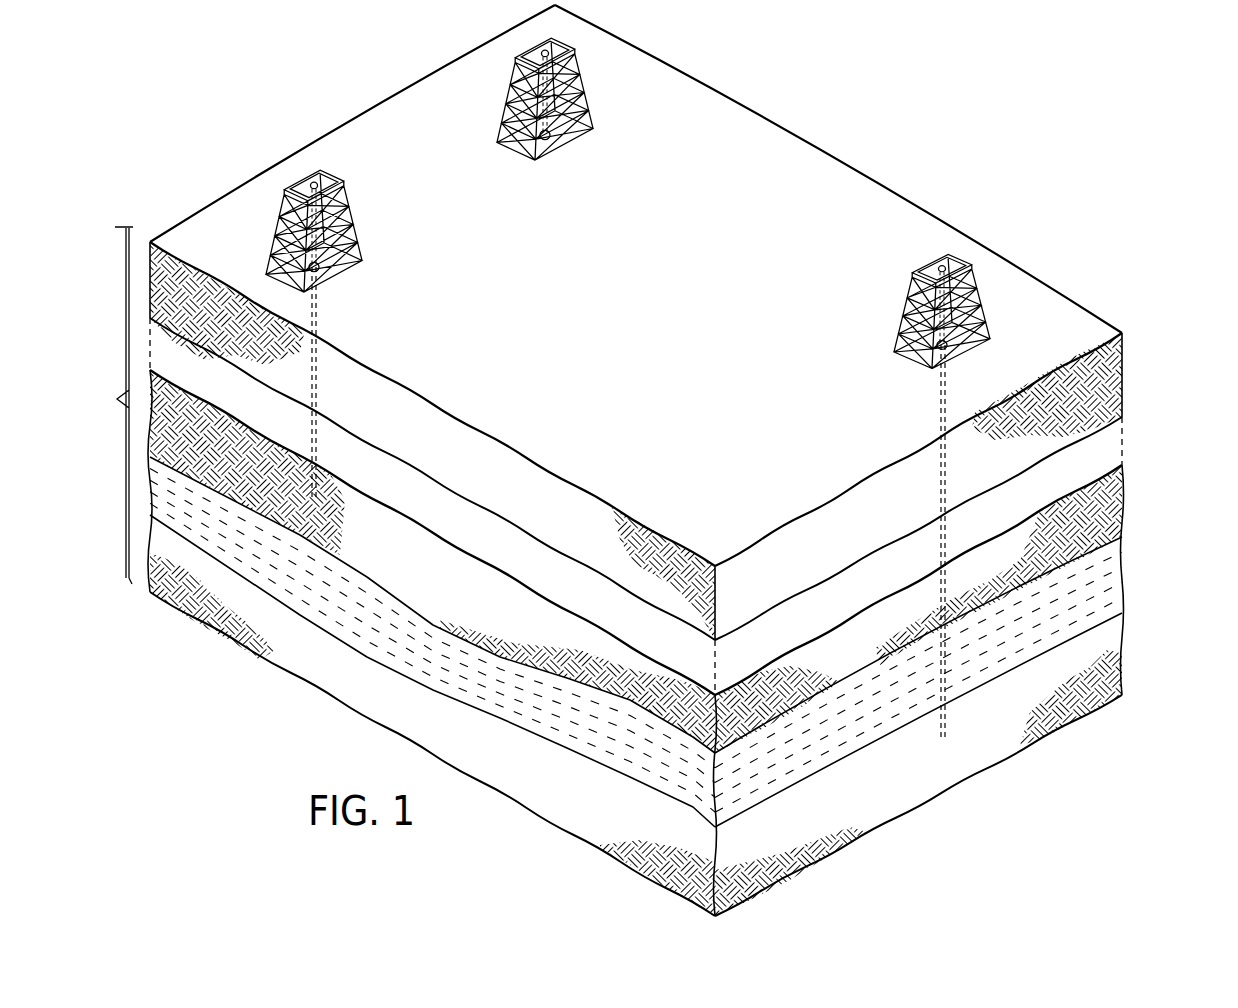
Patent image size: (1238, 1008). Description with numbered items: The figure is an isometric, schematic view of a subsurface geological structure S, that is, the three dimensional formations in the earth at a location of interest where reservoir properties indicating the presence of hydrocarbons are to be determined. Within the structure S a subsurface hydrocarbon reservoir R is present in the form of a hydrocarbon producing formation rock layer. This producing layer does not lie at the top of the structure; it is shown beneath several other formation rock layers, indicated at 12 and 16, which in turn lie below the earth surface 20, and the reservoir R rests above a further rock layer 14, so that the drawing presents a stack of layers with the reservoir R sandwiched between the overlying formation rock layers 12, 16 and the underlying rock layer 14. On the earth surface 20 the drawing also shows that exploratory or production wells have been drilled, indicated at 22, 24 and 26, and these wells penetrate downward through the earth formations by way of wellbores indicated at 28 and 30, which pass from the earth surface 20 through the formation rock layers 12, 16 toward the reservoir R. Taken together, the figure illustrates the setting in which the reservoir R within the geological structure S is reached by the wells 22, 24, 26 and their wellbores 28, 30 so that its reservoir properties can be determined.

The formation rock layer 12 is at (1125, 502).
The rock layer 14 is at (1120, 657).
The formation rock layer 16 is at (1125, 370).
The earth surface 20 is at (792, 156).
The well 22 is at (960, 257).
The well 24 is at (577, 84).
The well 26 is at (305, 178).
The wellbore 28 is at (322, 320).
The wellbore 30 is at (938, 414).
The subsurface hydrocarbon reservoir R is at (1138, 561).
The subsurface geological structure S is at (113, 405).